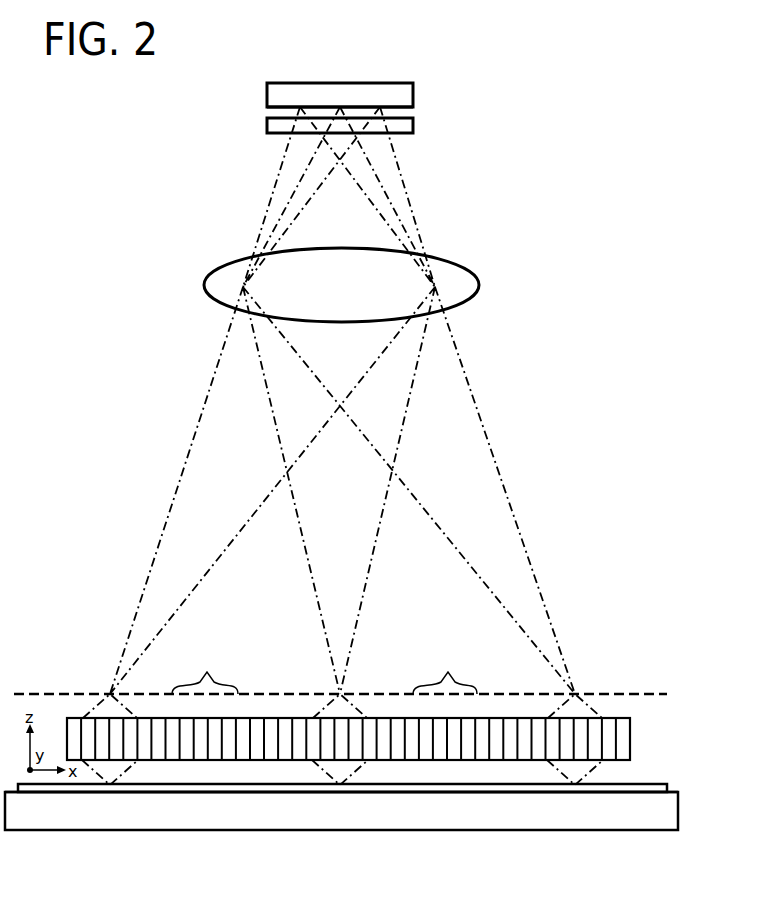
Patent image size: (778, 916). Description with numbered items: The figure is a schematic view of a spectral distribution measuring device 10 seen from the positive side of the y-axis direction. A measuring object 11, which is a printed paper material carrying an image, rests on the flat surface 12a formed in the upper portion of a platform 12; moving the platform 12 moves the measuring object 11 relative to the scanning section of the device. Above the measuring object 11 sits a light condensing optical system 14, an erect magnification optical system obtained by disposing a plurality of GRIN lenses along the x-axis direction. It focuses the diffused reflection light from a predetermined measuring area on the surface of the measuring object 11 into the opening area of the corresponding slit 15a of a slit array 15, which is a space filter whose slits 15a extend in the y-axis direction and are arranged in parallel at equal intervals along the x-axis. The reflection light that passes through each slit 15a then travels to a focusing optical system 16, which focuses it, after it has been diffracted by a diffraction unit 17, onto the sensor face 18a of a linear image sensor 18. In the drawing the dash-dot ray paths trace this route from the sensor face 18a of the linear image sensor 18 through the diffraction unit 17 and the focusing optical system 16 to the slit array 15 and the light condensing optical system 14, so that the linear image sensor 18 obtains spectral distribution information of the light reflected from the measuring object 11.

The spectral distribution measuring device 10 is at (170, 209).
The measuring object 11 is at (642, 783).
The platform 12 is at (458, 820).
The flat surface 12a is at (672, 790).
The light condensing optical system 14 is at (637, 714).
The slit array 15 is at (594, 684).
The slits 15a is at (324, 671).
The focusing optical system 16 is at (487, 281).
The diffraction unit 17 is at (416, 142).
The linear image sensor 18 is at (408, 67).
The sensor face 18a is at (268, 117).